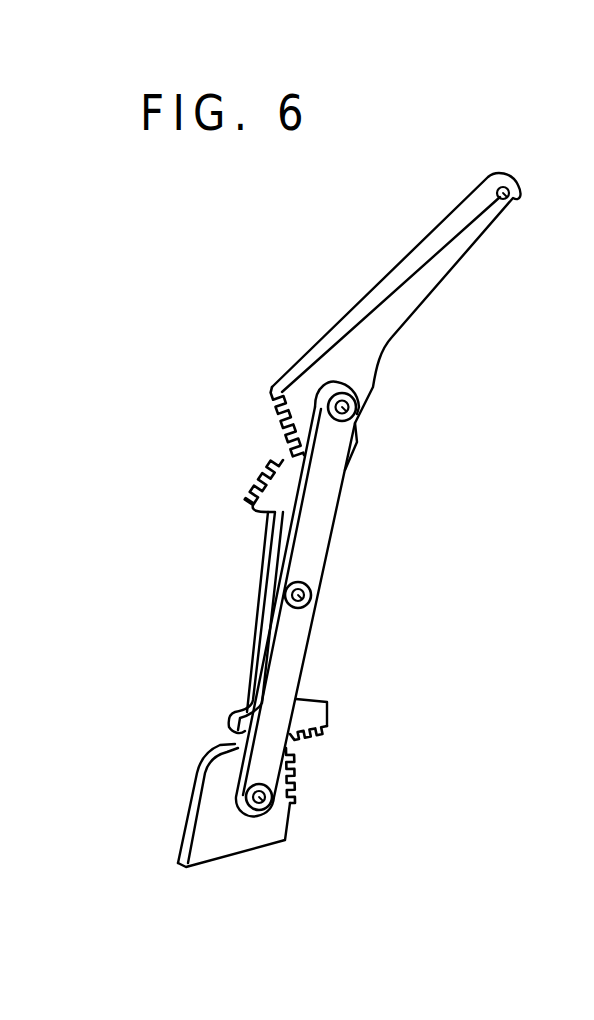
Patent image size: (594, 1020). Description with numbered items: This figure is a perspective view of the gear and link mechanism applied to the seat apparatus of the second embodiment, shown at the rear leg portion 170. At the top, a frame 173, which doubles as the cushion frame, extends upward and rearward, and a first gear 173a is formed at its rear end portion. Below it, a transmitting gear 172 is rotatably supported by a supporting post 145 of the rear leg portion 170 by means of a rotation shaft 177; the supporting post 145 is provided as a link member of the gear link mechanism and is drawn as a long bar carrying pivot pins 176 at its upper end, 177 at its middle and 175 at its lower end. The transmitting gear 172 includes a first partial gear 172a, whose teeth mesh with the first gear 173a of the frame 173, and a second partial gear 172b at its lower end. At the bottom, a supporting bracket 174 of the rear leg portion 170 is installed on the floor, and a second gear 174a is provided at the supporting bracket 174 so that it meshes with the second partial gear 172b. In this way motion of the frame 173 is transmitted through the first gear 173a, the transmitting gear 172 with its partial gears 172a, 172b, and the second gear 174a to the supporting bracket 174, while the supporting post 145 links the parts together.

The rear leg portion 170 is at (377, 585).
The frame 173 is at (425, 287).
The first gear 173a is at (270, 425).
The transmitting gear 172 is at (276, 617).
The first partial gear 172a is at (262, 473).
The second partial gear 172b is at (305, 733).
The supporting post 145 is at (283, 660).
The upper pivot pin 176 is at (350, 416).
The rotation shaft 177 is at (311, 600).
The lower pivot pin 175 is at (273, 800).
The supporting bracket 174 is at (297, 817).
The second gear 174a is at (295, 770).